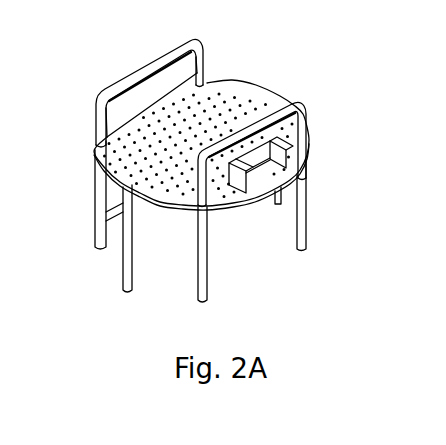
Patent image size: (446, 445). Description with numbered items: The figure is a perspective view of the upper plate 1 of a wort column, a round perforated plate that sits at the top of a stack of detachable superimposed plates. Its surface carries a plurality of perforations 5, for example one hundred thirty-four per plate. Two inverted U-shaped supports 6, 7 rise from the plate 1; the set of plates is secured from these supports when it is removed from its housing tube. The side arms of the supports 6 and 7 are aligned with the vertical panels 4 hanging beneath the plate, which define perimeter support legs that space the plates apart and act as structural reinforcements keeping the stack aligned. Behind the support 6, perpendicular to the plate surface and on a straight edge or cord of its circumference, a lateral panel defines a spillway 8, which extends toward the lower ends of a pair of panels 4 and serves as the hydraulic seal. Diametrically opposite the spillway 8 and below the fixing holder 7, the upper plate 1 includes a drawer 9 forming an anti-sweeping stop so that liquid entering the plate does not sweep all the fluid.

The upper plate 1 is at (281, 60).
The vertical panels 4 is at (126, 266).
The perforations 5 is at (268, 98).
The inverted U shaped support 6 is at (133, 72).
The inverted U shaped support 7 is at (305, 121).
The spillway 8 is at (177, 74).
The drawer 9 is at (237, 192).